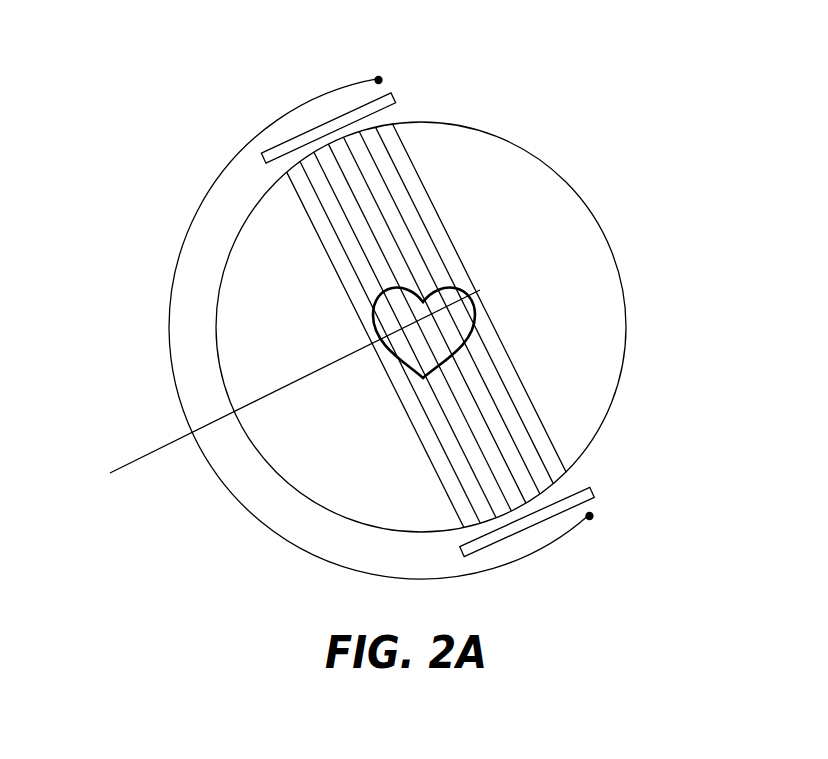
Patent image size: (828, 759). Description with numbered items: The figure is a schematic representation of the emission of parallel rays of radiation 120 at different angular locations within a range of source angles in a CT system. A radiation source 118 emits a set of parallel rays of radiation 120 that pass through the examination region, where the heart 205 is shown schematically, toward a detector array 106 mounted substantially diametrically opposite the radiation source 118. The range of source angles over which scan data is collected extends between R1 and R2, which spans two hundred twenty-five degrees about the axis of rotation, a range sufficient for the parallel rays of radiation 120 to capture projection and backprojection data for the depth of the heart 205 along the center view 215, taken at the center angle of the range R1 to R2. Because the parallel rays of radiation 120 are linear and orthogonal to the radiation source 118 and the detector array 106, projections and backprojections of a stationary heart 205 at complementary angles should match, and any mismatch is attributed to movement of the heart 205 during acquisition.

The radiation source 118 is at (313, 133).
The detector array 106 is at (593, 487).
The radiation 120 is at (413, 195).
The heart 205 is at (475, 310).
The center view 215 is at (298, 377).
The first end of the range of source angles R1 is at (381, 80).
The second end of the range of source angles R2 is at (593, 515).